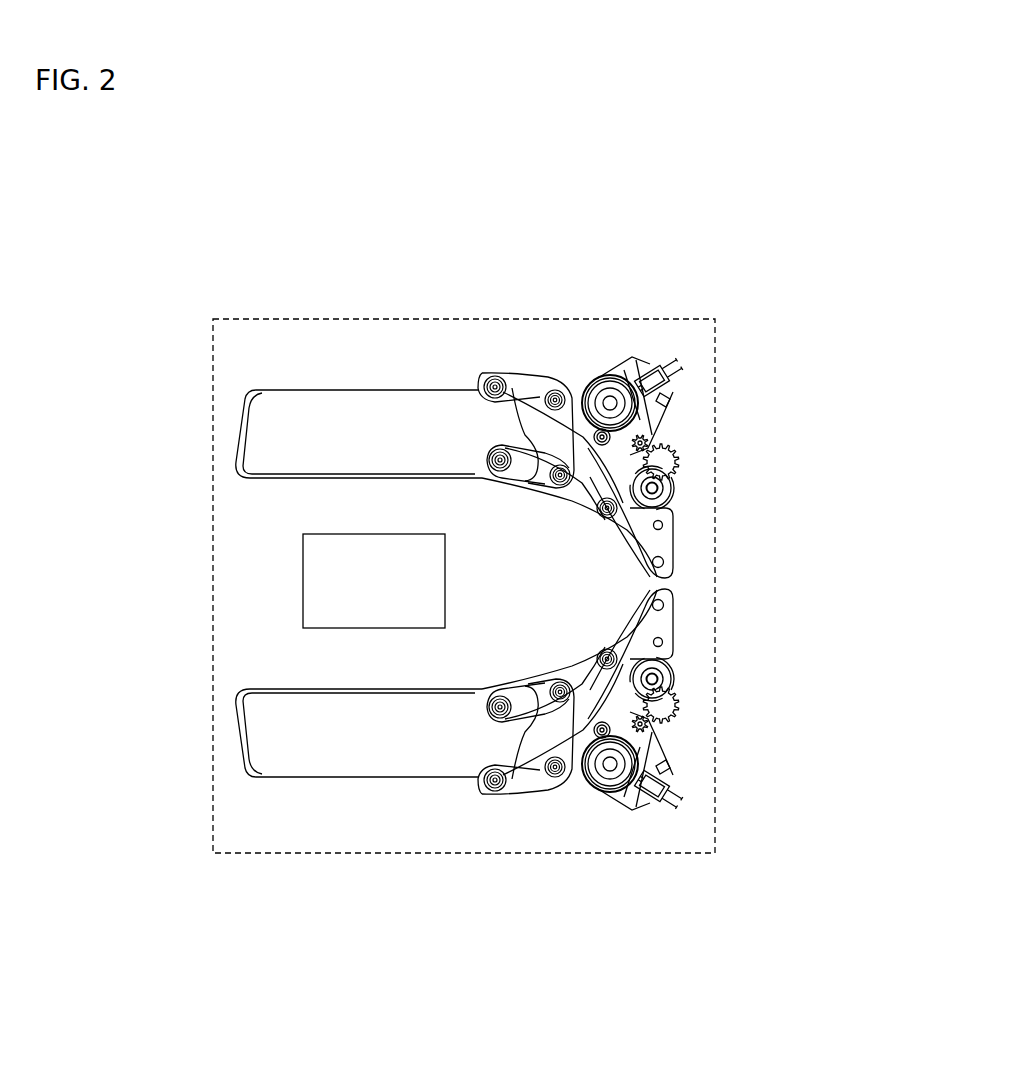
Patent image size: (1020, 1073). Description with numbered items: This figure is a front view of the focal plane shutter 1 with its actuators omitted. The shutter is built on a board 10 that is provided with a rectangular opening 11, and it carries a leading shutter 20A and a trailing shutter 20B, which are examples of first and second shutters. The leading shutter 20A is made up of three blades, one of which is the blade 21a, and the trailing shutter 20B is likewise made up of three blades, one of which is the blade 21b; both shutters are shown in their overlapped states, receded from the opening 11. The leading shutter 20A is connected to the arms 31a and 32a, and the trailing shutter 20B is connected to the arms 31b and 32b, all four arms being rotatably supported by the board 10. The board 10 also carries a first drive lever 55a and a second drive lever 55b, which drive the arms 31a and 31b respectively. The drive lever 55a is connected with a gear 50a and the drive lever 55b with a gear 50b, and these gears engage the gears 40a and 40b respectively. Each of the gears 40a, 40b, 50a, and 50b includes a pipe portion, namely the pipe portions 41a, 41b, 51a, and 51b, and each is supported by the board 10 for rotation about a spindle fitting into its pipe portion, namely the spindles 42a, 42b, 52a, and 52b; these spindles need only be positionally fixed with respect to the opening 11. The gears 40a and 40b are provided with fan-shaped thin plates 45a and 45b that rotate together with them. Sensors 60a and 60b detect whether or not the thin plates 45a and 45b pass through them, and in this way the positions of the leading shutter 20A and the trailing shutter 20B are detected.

The focal plane shutter 1 is at (547, 215).
The board 10 is at (217, 320).
The opening 11 is at (327, 537).
The leading shutter 20A is at (425, 782).
The trailing shutter 20B is at (428, 386).
The blade 21a is at (325, 748).
The blade 21b is at (310, 403).
The arm 31a is at (520, 787).
The arm 31b is at (527, 377).
The arm 32a is at (663, 622).
The arm 32b is at (657, 542).
The gear 40a is at (660, 742).
The gear 40b is at (665, 420).
The pipe portion 41a is at (610, 795).
The pipe portion 41b is at (620, 372).
The spindle 42a is at (630, 800).
The spindle 42b is at (635, 360).
The thin plate 45a is at (642, 803).
The thin plate 45b is at (640, 360).
The gear 50a is at (667, 708).
The gear 50b is at (670, 470).
The pipe portion 51a is at (667, 658).
The pipe portion 51b is at (665, 488).
The spindle 52a is at (658, 680).
The spindle 52b is at (658, 493).
The first drive lever 55a is at (652, 730).
The second drive lever 55b is at (650, 445).
The sensor 60a is at (667, 781).
The sensor 60b is at (667, 397).